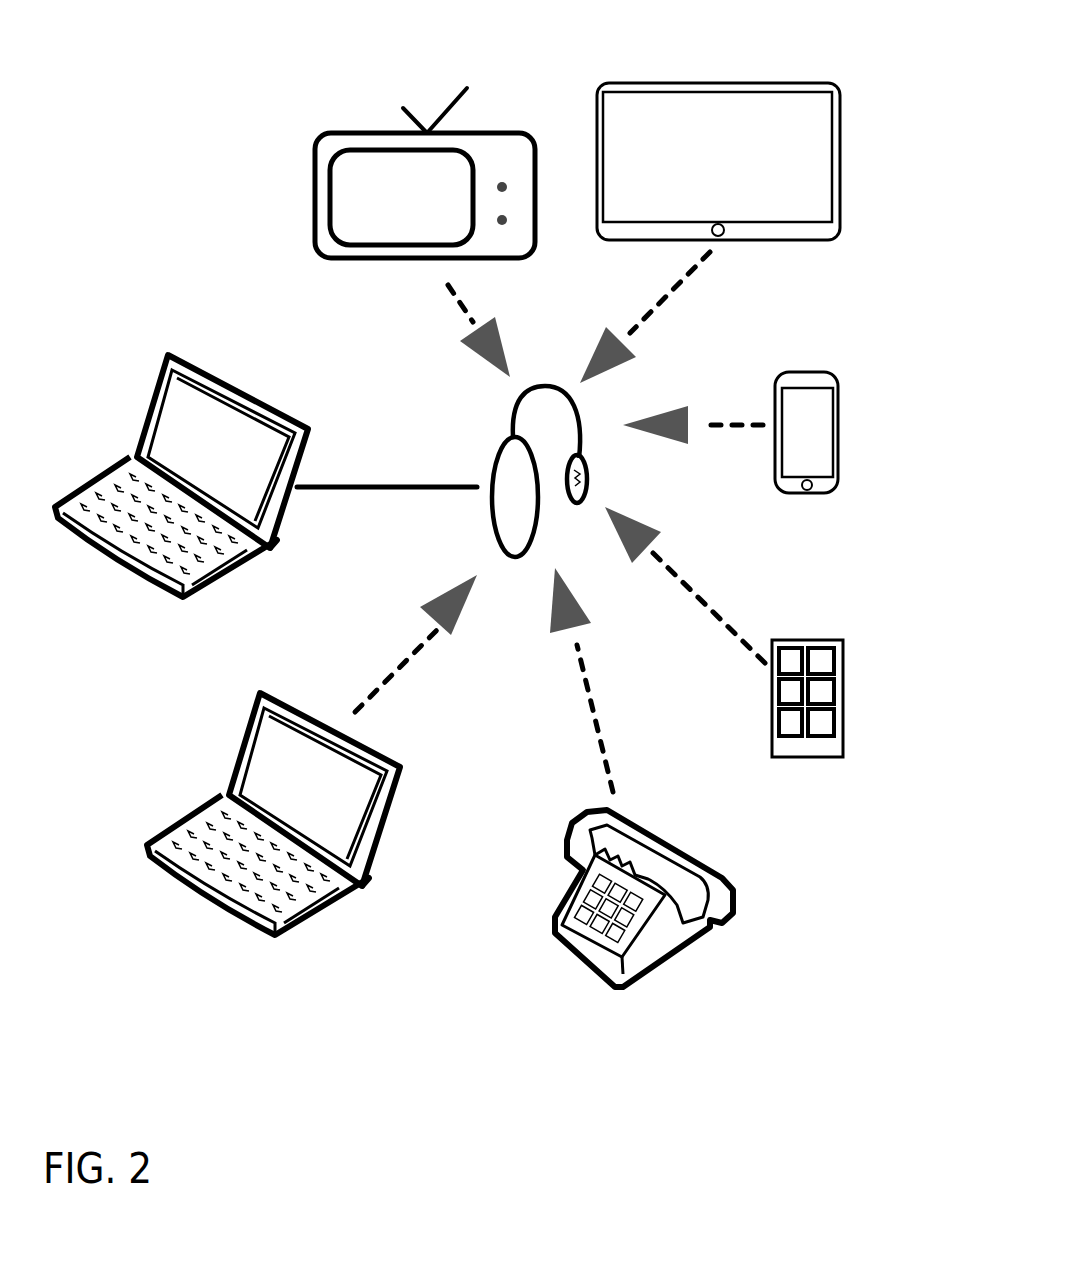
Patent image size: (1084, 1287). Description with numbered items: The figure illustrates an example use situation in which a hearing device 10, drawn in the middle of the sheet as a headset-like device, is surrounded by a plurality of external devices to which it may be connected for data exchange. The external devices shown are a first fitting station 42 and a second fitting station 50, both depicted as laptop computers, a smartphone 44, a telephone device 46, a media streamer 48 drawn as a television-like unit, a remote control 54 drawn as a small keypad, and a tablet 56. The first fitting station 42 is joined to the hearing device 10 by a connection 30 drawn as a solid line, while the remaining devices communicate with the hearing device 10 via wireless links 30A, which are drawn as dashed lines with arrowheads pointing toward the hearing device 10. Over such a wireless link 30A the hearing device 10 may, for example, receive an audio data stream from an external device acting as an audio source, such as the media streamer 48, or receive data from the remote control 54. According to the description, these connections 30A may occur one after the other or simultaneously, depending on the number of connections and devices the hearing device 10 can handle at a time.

The hearing device 10 is at (503, 482).
The connection 30 is at (381, 499).
The wireless link 30A is at (652, 295).
The first fitting station 42 is at (167, 420).
The smartphone 44 is at (818, 447).
The telephone device 46 is at (670, 943).
The media streamer 48 is at (482, 160).
The second fitting station 50 is at (303, 897).
The remote control 54 is at (832, 702).
The tablet 56 is at (788, 122).